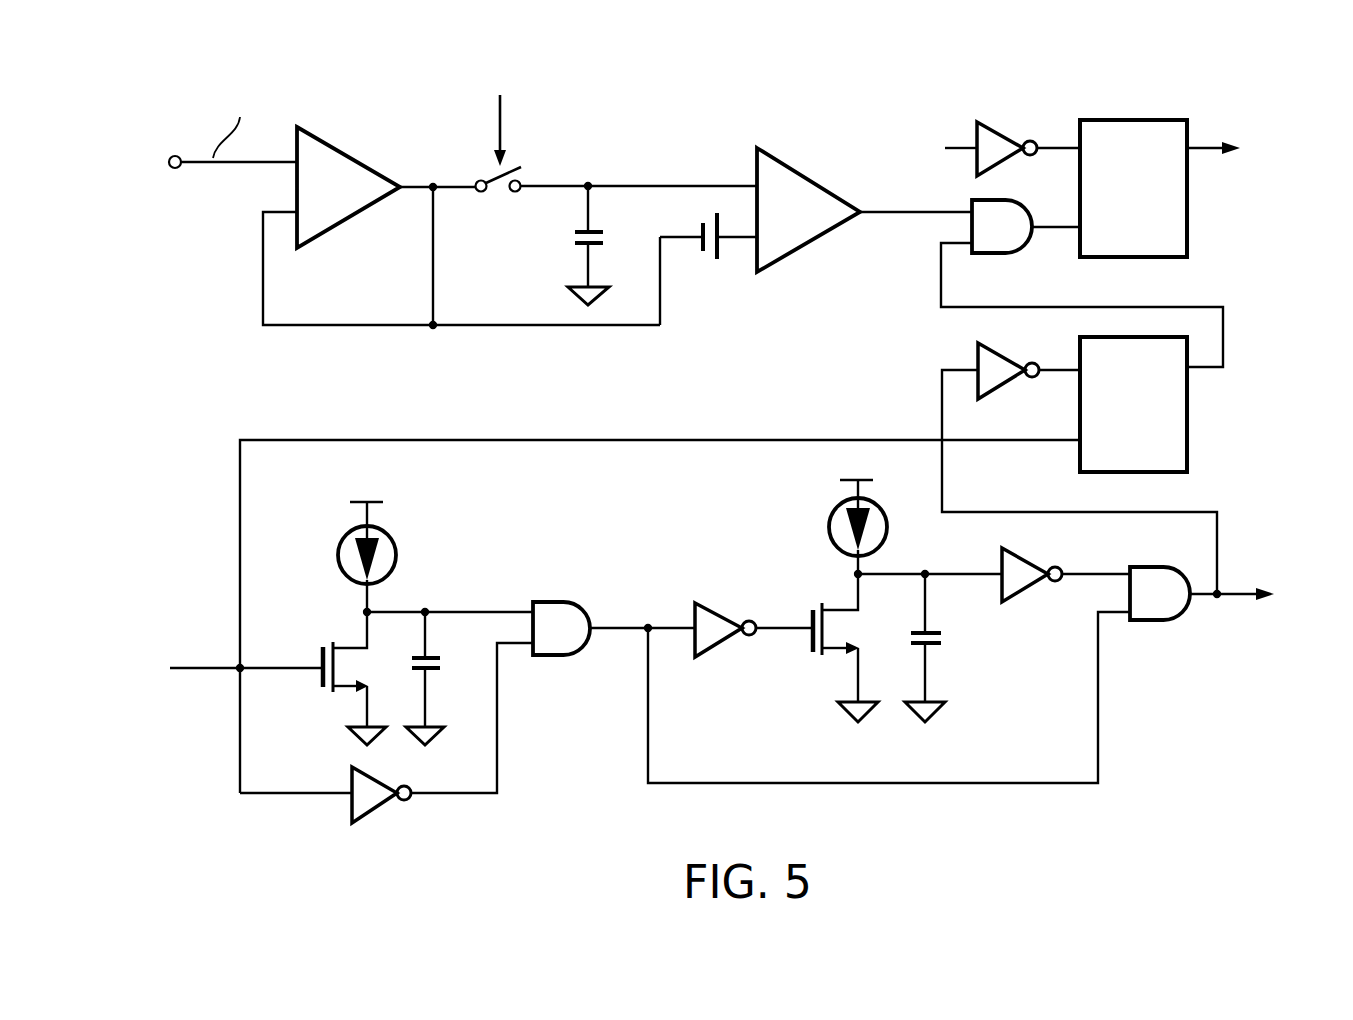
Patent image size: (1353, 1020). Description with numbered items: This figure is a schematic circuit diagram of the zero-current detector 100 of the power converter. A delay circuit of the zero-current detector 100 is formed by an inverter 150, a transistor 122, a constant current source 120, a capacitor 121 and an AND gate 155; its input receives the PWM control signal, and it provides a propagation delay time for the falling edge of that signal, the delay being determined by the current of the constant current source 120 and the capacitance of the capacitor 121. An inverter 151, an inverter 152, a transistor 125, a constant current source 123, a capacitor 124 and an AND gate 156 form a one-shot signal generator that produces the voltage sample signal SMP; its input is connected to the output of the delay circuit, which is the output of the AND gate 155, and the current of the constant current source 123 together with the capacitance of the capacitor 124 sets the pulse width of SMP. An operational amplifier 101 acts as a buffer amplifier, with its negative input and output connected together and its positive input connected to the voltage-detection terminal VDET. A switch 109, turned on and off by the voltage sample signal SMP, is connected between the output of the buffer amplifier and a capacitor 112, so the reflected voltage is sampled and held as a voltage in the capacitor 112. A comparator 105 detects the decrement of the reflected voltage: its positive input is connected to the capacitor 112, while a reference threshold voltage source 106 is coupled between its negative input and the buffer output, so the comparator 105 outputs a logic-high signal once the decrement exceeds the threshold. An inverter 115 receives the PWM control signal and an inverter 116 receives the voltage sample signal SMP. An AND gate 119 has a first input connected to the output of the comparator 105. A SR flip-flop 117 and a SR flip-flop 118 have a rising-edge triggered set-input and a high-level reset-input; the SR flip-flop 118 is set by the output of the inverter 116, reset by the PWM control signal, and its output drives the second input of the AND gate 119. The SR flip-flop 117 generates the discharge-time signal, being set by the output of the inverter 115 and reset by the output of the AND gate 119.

The zero-current detector 100 is at (1172, 60).
The operational amplifier 101 is at (318, 130).
The comparator 105 is at (797, 258).
The reference threshold voltage source 106 is at (708, 260).
The switch 109 is at (517, 158).
The capacitor 112 is at (575, 238).
The inverter 115 is at (998, 128).
The inverter 116 is at (970, 358).
The SR flip-flop 117 is at (1190, 222).
The SR flip-flop 118 is at (1190, 445).
The AND gate 119 is at (1022, 255).
The constant current source 120 is at (397, 552).
The capacitor 121 is at (448, 663).
The transistor 122 is at (327, 697).
The constant current source 123 is at (825, 537).
The capacitor 124 is at (948, 637).
The transistor 125 is at (817, 658).
The inverter 150 is at (377, 815).
The inverter 151 is at (710, 605).
The inverter 152 is at (1018, 545).
The AND gate 155 is at (565, 600).
The AND gate 156 is at (1152, 625).